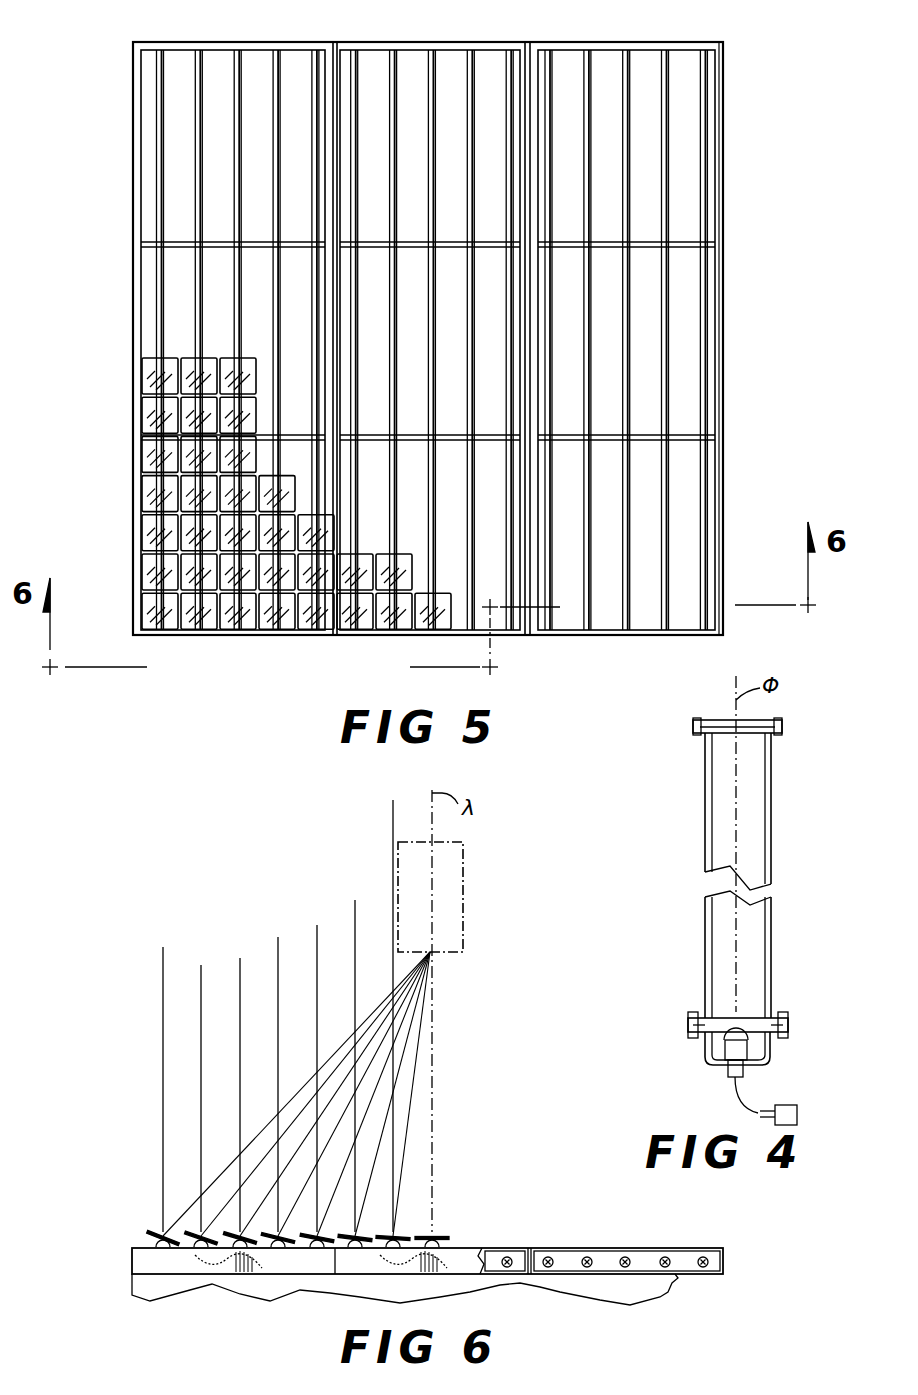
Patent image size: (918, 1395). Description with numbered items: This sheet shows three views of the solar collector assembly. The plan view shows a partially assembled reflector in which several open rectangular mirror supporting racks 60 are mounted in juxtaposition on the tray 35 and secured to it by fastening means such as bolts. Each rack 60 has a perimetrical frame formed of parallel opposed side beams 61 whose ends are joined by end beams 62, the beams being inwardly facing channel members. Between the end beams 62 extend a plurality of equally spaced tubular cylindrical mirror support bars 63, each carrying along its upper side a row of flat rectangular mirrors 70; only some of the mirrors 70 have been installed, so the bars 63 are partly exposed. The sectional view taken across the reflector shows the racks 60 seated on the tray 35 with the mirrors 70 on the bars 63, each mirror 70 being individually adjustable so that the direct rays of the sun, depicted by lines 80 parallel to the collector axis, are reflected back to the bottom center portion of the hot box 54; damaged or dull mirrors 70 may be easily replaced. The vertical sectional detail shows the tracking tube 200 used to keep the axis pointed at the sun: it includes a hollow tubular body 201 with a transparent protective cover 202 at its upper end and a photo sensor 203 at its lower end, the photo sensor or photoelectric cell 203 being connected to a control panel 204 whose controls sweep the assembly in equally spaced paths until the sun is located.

In FIG. 6, the tray 35 is at (258, 1290).
In FIG. 6, the hot box 54 is at (466, 898).
In FIG. 5, the mirror supporting rack 60 is at (226, 44).
In FIG. 6, the mirror supporting rack 60 is at (230, 1278).
In FIG. 5, the side beam 61 is at (724, 282).
In FIG. 5, the end beam 62 is at (647, 43).
In FIG. 5, the mirror support bar 63 is at (398, 205).
In FIG. 5, the mirror 70 is at (200, 420).
In FIG. 6, the mirror 70 is at (167, 1232).
In FIG. 6, the lines depicting rays of the sun 80 is at (163, 1000).
In FIG. 4, the tracking tube 200 is at (776, 922).
In FIG. 4, the hollow tubular body 201 is at (705, 840).
In FIG. 4, the transparent protective cover 202 is at (757, 722).
In FIG. 4, the photo sensor 203 is at (703, 1052).
In FIG. 4, the control panel 204 is at (793, 1107).